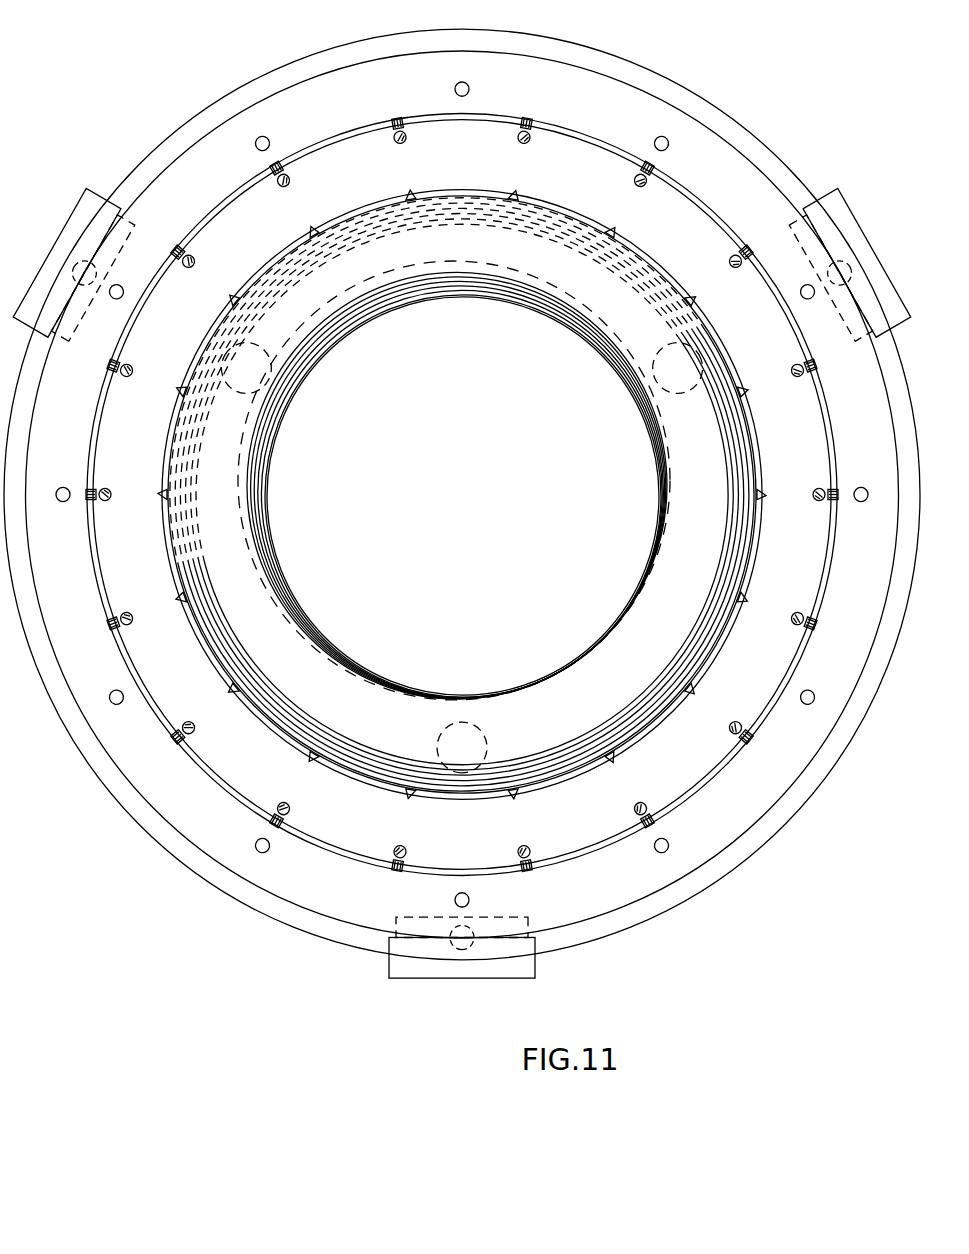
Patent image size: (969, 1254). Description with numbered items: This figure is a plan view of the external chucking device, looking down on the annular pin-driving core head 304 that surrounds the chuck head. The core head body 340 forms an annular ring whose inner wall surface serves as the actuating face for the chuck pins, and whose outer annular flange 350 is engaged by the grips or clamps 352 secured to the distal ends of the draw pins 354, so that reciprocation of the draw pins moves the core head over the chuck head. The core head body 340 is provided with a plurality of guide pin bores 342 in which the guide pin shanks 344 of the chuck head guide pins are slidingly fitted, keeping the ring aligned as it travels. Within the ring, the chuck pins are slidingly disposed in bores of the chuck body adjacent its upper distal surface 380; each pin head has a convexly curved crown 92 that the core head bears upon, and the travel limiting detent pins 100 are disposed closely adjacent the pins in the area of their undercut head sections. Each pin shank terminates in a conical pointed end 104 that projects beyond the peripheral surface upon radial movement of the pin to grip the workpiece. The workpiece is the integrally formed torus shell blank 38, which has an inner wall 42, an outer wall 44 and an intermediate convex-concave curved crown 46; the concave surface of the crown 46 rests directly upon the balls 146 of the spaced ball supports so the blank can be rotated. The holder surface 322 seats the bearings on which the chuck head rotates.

The annular pin-driving core head 304 is at (568, 62).
The core head body 340 is at (178, 168).
The outer annular flange 350 is at (334, 56).
The upper distal surface 380 is at (244, 198).
The convexly curved crown 92 is at (395, 120).
The detent pin 100 is at (290, 184).
The outer wall 44 is at (632, 252).
The conical pointed end 104 is at (320, 233).
The intermediate convex-concave curved crown 46 is at (523, 298).
The integrally formed torus shell blank 38 is at (432, 300).
The inner wall 42 is at (514, 676).
The adjacent surface of the holder 322 is at (478, 450).
The balls 146 is at (255, 350).
The guide pin bores 342 is at (470, 92).
The guide pin shanks 344 is at (260, 136).
The grips or clamps 352 is at (92, 200).
The draw pins 354 is at (92, 274).